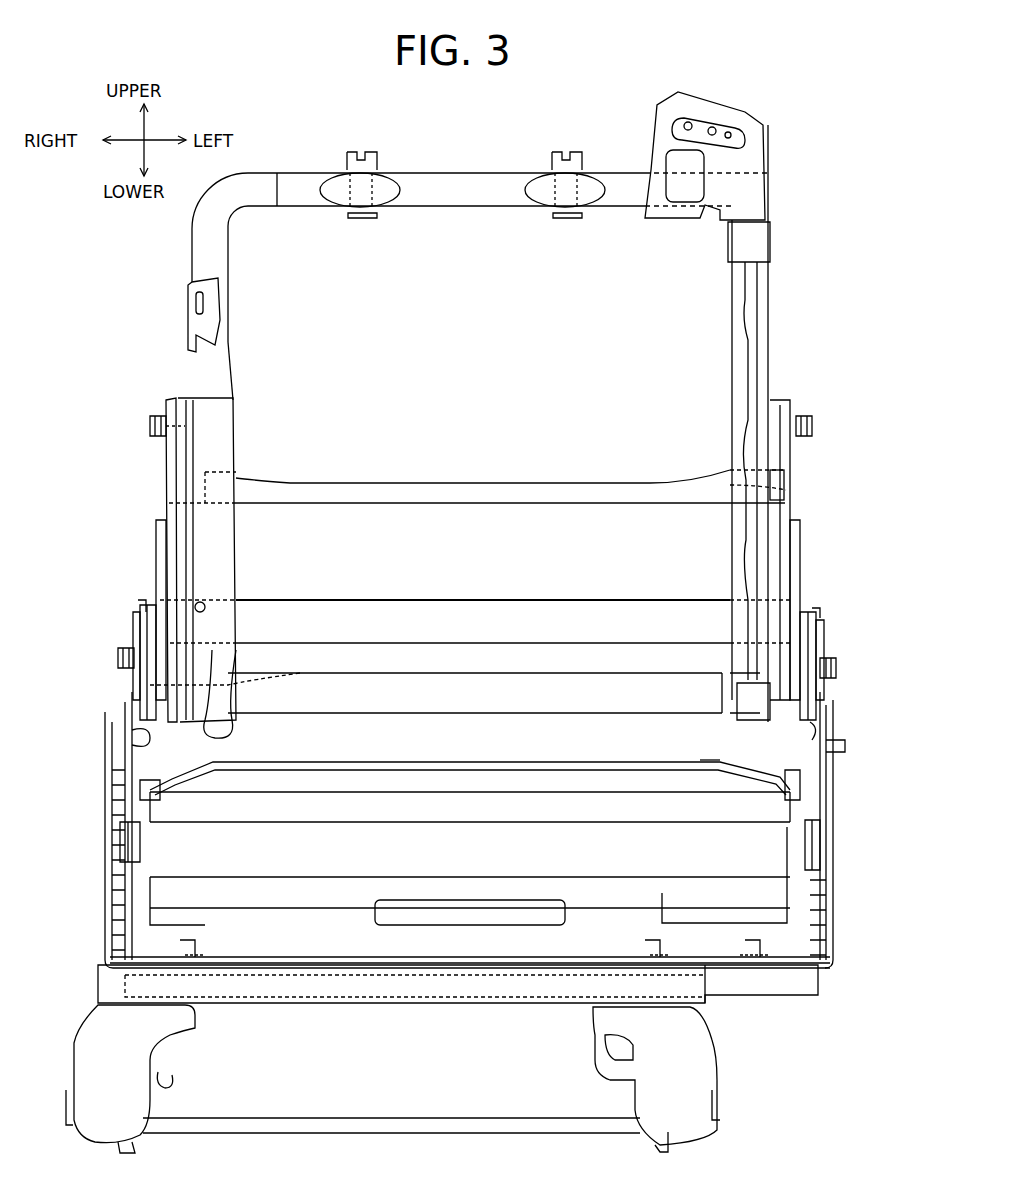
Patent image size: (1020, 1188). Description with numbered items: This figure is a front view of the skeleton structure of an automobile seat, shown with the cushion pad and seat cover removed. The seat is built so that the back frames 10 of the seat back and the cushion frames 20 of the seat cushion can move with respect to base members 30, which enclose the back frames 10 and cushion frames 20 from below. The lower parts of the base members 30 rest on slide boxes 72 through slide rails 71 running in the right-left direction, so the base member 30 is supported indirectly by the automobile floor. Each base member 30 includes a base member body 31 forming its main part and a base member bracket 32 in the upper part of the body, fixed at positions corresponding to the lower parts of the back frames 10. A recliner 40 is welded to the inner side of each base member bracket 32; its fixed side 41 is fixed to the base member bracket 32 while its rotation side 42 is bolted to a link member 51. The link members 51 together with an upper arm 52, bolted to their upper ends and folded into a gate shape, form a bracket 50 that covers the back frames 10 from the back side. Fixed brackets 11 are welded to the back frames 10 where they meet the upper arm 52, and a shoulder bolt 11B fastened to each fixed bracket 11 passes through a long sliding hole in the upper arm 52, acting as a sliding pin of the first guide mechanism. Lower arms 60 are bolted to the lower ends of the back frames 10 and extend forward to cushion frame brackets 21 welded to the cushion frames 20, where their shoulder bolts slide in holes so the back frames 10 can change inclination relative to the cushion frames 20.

The back frame 10 is at (768, 312).
The fixed bracket 11 is at (178, 402).
The shoulder bolt 11B is at (150, 425).
The cushion frame 20 is at (600, 905).
The cushion frame bracket 21 is at (145, 785).
The base member 30 is at (118, 912).
The base member body 31 is at (120, 835).
The base member bracket 32 is at (140, 735).
The recliner 40 is at (151, 592).
The fixed side 41 is at (142, 602).
The rotation side 42 is at (150, 640).
The bracket 50 is at (128, 530).
The link member 51 is at (120, 655).
The upper arm 52 is at (170, 500).
The lower arm 60 is at (170, 768).
The slide rail 71 is at (822, 1004).
The slide box 72 is at (157, 1055).